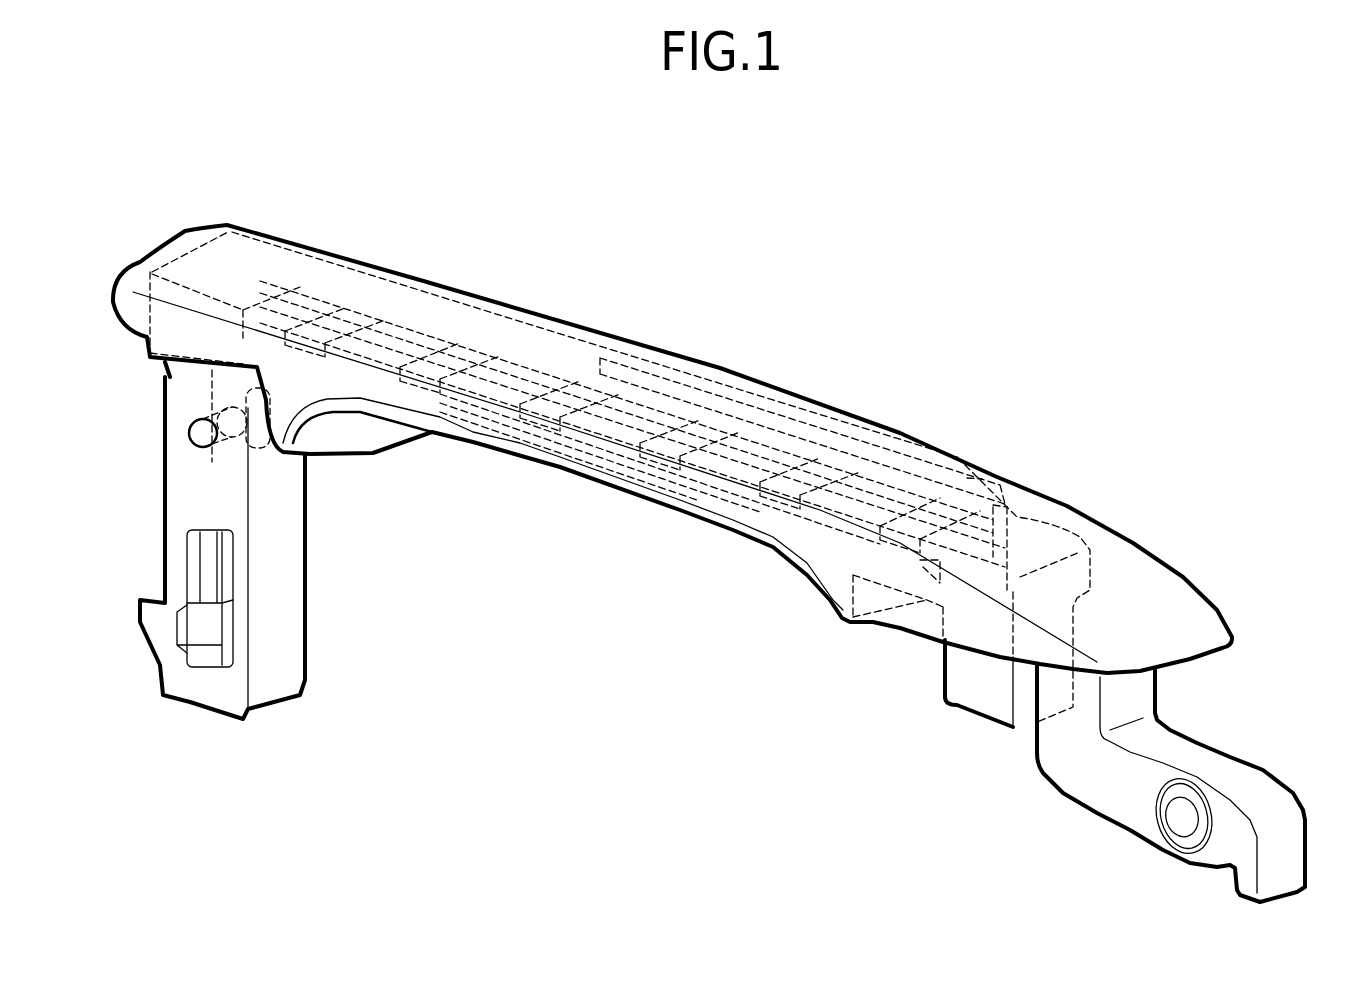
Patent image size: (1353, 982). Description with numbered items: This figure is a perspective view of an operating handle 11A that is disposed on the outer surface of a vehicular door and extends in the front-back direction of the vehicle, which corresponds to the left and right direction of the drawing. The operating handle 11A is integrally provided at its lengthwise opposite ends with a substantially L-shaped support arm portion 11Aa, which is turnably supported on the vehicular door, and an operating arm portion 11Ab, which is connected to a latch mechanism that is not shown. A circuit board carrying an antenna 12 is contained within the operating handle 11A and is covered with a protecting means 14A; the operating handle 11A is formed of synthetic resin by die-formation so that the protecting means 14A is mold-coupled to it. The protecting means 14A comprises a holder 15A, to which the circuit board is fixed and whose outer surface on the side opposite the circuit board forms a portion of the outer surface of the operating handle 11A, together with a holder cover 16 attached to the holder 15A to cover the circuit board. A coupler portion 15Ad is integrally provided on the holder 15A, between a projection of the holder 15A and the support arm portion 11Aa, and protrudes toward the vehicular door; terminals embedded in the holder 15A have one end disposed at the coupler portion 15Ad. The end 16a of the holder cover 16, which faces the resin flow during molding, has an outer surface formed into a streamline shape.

The operating handle 11A is at (765, 400).
The support arm portion 11Aa is at (1163, 748).
The operating arm portion 11Ab is at (273, 590).
The antenna 12 is at (510, 380).
The protecting means 14A is at (645, 352).
The holder 15A is at (830, 577).
The coupler portion 15Ad is at (967, 672).
The holder cover 16 is at (845, 445).
The end of the holder cover 16a is at (1000, 472).